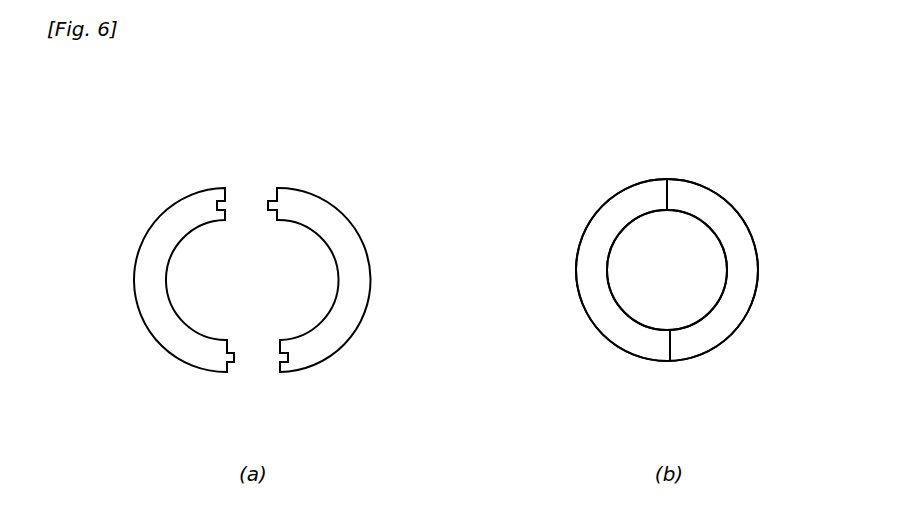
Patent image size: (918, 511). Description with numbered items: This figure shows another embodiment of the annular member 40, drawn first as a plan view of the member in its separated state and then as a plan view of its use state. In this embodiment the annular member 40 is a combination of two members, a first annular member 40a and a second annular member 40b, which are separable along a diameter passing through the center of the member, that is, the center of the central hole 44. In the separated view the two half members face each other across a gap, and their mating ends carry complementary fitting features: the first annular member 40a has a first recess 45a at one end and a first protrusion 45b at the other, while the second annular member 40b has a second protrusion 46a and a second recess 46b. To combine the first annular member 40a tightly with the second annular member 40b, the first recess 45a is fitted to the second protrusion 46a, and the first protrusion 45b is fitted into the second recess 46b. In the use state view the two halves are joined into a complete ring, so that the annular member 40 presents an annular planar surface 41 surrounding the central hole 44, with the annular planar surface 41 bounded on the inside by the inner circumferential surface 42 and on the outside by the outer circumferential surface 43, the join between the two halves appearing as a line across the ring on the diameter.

The annular member 40 is at (198, 124).
The first annular member 40a is at (200, 203).
The second annular member 40b is at (302, 205).
The annular planar surface 41 is at (737, 232).
The inner circumferential surface 42 is at (703, 292).
The outer circumferential surface 43 is at (588, 318).
The central hole 44 is at (653, 278).
The first recess 45a is at (220, 203).
The first protrusion 45b is at (235, 357).
The second protrusion 46a is at (268, 203).
The second recess 46b is at (277, 360).